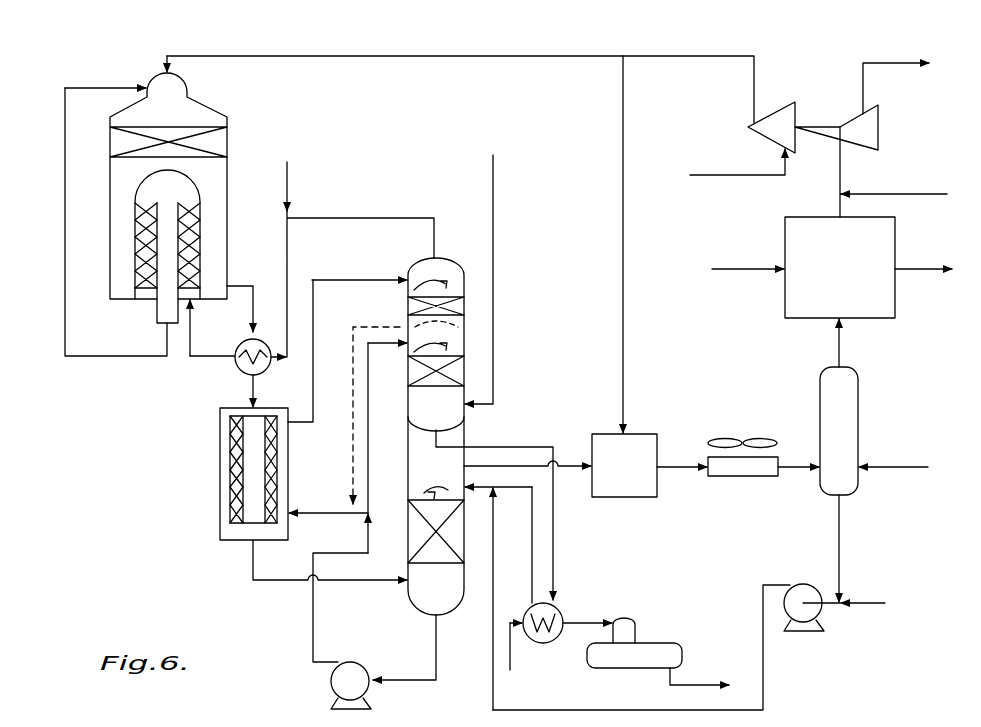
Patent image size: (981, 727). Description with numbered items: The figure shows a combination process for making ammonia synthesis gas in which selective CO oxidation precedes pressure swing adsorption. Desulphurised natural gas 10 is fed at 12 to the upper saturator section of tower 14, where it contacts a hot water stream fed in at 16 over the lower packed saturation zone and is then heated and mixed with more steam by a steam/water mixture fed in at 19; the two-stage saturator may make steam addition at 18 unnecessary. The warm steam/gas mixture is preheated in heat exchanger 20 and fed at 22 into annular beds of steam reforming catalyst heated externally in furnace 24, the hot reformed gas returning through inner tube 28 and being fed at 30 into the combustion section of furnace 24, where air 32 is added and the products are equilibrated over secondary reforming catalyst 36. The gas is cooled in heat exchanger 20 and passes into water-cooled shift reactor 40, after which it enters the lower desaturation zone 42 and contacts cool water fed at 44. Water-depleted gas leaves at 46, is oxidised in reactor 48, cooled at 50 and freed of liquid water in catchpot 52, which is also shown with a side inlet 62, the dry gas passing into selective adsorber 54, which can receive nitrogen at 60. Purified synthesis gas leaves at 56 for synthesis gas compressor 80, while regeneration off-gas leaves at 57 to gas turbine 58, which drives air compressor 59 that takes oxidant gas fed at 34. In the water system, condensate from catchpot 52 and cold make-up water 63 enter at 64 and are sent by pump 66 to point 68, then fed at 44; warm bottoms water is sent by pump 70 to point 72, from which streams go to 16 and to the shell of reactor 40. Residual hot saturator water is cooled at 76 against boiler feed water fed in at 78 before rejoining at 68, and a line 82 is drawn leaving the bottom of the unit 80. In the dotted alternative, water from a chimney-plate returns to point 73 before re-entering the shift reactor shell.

The desulphurised natural gas 10 is at (494, 165).
The feed point to saturator section 12 is at (470, 404).
The tower 14 is at (408, 444).
The hot water feed point 16 is at (410, 348).
The steam feed point 18 is at (287, 182).
The steam/water mixture feed point 19 is at (408, 293).
The preheater heat exchanger 20 is at (266, 370).
The reformer tube 22 is at (190, 318).
The furnace 24 is at (178, 202).
The inner tube 28 is at (167, 344).
The partly cooled gas feed point 30 is at (128, 86).
The air feed 32 is at (196, 55).
The oxidant gas feed 34 is at (623, 60).
The secondary reforming catalyst 36 is at (170, 142).
The water-cooled shift reactor 40 is at (220, 487).
The desaturation tower section 42 is at (409, 605).
The cool water feed point 44 is at (446, 488).
The water-depleted gas outlet 46 is at (470, 465).
The selective CO oxidation reactor 48 is at (636, 478).
The cooler 50 is at (748, 477).
The catchpot 52 is at (858, 415).
The selective adsorber 54 is at (852, 278).
The purified synthesis gas outlet 56 is at (930, 270).
The regeneration off-gas outlet 57 is at (881, 172).
The gas turbine 58 is at (856, 114).
The air compressor 59 is at (760, 138).
The nitrogen feed point 60 is at (747, 270).
The inlet line 62 is at (913, 466).
The cold make-up water 63 is at (885, 602).
The make-up water feed point 64 is at (850, 626).
The pump 66 is at (803, 632).
The water mixing point 68 is at (641, 599).
The pump 70 is at (334, 700).
The warm water distribution point 72 is at (369, 513).
The chimney-plate water return point 73 is at (308, 515).
The heat exchanger 76 is at (556, 611).
The boiler feed water inlet 78 is at (510, 668).
The synthesis gas compressor 80 is at (622, 668).
The outlet line 82 is at (705, 685).